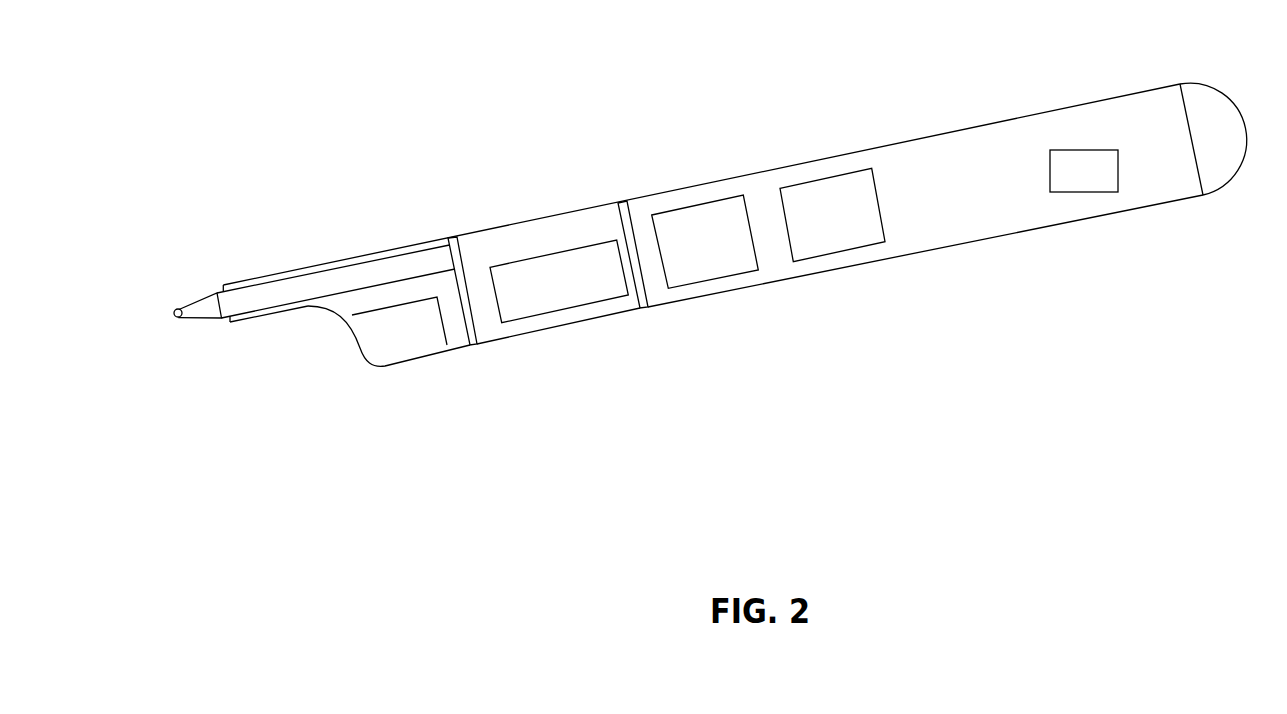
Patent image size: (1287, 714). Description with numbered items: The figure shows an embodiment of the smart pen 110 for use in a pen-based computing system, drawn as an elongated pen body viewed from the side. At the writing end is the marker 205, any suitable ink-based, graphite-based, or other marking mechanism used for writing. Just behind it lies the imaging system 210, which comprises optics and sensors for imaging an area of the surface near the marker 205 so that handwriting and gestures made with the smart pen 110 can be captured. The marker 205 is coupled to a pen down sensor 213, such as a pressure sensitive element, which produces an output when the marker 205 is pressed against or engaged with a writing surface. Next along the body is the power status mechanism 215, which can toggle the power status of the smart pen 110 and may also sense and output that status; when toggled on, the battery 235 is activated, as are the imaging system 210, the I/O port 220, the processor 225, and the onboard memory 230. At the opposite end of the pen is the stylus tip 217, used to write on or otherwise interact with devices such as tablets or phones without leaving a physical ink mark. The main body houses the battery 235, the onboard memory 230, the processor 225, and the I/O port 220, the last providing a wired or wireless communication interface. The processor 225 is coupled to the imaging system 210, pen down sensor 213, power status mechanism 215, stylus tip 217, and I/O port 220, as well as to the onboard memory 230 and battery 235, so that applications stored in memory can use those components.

The smart pen 110 is at (949, 84).
The marker 205 is at (176, 310).
The imaging system 210 is at (386, 344).
The pen down sensor 213 is at (473, 346).
The power status mechanism 215 is at (648, 308).
The stylus tip 217 is at (1212, 148).
The I/O port 220 is at (1063, 182).
The processor 225 is at (812, 230).
The onboard memory 230 is at (686, 258).
The battery 235 is at (535, 294).